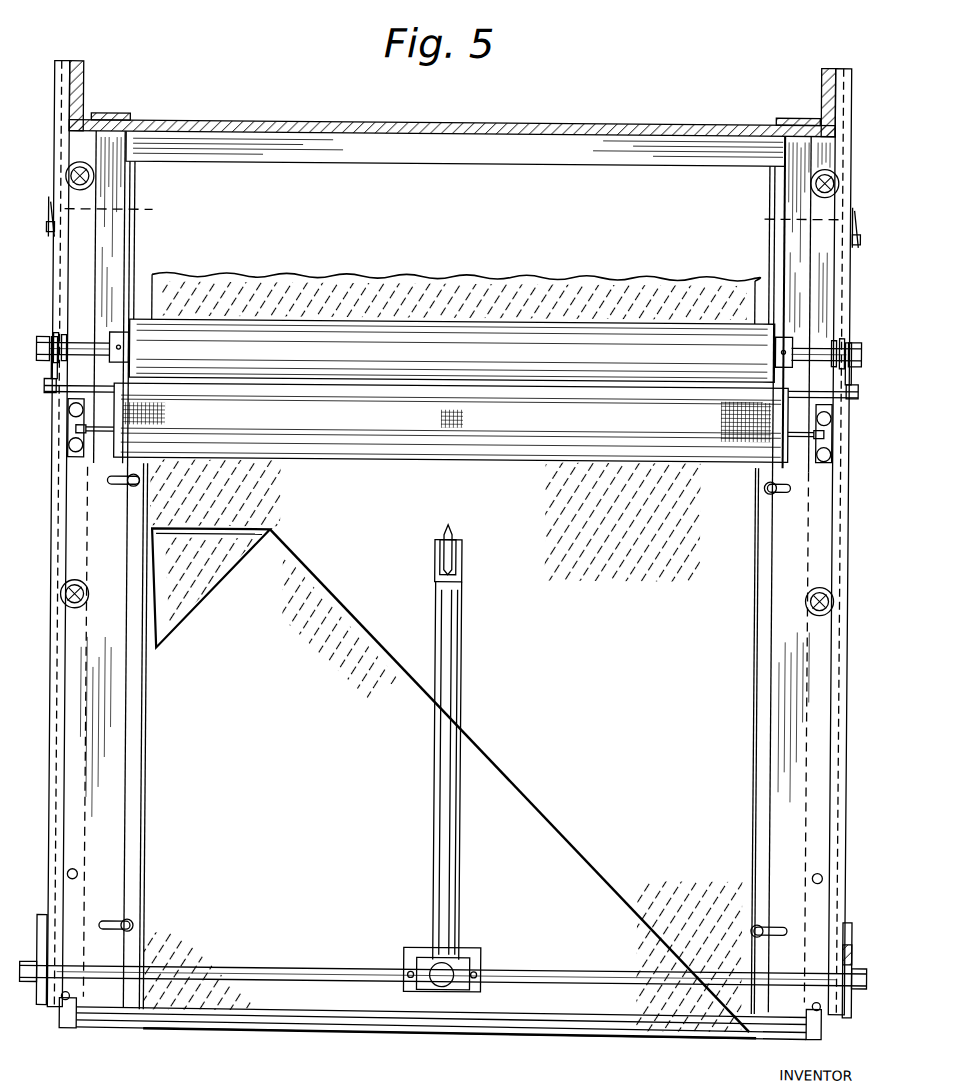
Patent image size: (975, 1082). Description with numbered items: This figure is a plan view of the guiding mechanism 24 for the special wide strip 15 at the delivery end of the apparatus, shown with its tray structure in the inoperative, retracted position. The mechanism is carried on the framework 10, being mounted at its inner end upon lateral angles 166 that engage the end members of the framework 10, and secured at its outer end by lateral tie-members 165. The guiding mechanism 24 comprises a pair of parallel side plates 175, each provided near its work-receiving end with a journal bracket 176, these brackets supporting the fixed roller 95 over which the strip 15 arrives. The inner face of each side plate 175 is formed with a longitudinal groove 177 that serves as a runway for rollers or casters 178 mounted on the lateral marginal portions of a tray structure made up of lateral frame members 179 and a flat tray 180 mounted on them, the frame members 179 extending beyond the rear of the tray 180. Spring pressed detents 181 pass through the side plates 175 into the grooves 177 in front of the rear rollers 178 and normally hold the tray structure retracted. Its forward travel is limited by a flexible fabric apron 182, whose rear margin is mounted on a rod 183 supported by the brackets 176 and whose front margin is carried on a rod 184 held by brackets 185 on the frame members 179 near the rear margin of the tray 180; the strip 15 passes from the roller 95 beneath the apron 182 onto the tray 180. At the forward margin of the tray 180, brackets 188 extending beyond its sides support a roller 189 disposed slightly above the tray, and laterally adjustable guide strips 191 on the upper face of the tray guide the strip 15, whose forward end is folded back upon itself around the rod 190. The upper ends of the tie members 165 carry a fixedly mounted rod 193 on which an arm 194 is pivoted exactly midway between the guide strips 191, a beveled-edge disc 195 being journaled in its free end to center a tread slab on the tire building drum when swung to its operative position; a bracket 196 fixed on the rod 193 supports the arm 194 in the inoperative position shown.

The framework 10 is at (80, 98).
The special wide strip 15 is at (360, 1016).
The guiding mechanism 24 is at (281, 1046).
The roller 95 is at (627, 352).
The lateral tie-members 165 is at (46, 1010).
The lateral angles 166 is at (70, 64).
The side plates 175 is at (50, 714).
The journal brackets 176 is at (46, 390).
The longitudinal groove 177 is at (55, 629).
The rollers or casters 178 is at (70, 168).
The lateral frame members 179 is at (108, 265).
The flat tray 180 is at (95, 822).
The spring pressed detents 181 is at (453, 214).
The flexible sheet or apron 182 is at (696, 425).
The rod 183 is at (836, 362).
The rod 184 is at (802, 462).
The brackets 185 is at (68, 442).
The brackets 188 is at (70, 1026).
The roller 189 is at (647, 1034).
The rod 190 is at (752, 1034).
The lateral guide strips 191 is at (125, 878).
The rod 193 is at (207, 975).
The arm 194 is at (456, 705).
The beveled-edge disc 195 is at (452, 530).
The bracket 196 is at (466, 950).